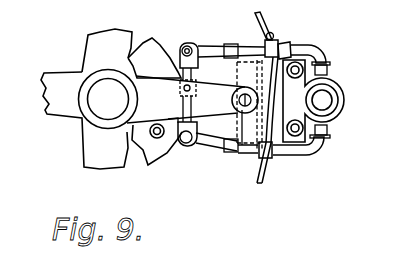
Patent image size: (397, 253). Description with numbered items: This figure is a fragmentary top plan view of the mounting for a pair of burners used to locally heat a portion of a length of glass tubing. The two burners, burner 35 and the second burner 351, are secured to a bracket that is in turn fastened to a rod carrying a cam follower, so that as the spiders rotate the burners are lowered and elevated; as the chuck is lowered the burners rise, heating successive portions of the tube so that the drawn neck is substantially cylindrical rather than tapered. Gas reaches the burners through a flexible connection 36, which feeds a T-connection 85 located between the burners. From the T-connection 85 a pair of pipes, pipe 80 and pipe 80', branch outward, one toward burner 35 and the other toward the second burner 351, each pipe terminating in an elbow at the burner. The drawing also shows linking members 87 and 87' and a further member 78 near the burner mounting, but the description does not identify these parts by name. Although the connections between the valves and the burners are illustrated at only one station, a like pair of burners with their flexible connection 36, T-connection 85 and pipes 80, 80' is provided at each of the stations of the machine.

The flexible connection 36 is at (178, 91).
The T-connection 85 is at (197, 94).
The upper connecting bar 87' is at (231, 41).
The lower connecting bar 87 is at (227, 156).
The rod 78 is at (267, 20).
The pipe 80' is at (312, 43).
The burner 351 is at (326, 54).
The pipe 80 is at (298, 159).
The burner 35 is at (327, 152).